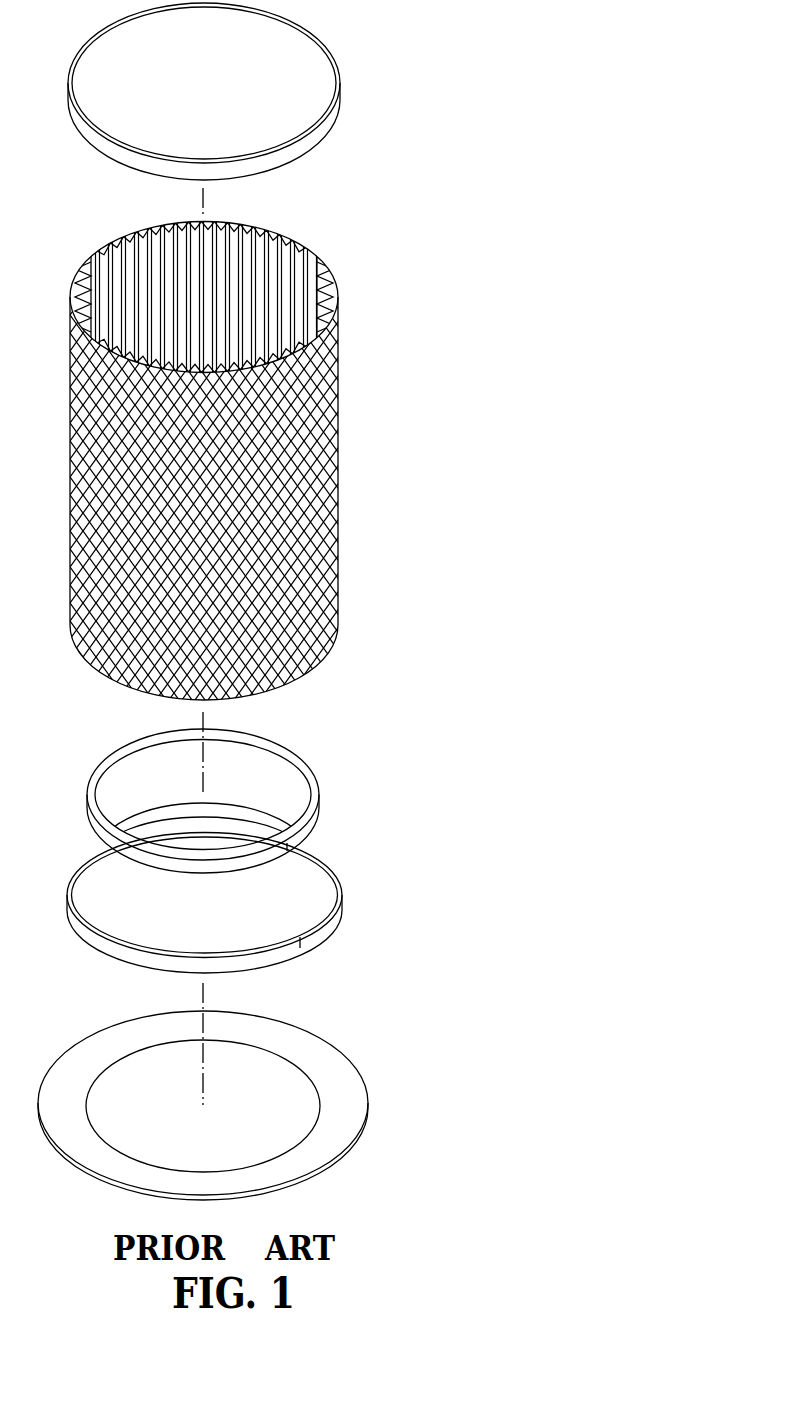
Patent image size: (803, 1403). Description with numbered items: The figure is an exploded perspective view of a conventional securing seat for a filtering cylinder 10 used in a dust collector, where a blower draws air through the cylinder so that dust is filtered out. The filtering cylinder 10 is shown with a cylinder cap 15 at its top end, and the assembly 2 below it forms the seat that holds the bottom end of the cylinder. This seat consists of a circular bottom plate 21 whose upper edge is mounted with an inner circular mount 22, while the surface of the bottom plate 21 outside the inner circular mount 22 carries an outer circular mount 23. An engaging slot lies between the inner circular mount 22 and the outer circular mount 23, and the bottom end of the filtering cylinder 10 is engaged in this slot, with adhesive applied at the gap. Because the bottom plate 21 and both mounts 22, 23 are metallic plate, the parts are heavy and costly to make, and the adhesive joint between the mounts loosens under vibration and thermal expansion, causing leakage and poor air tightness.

The cylinder cap 15 is at (320, 78).
The filtering cylinder 10 is at (337, 440).
The sealing ring assembly 2 is at (247, 955).
The inner circular mount 22 is at (307, 767).
The outer circular mount 23 is at (333, 863).
The circular bottom plate 21 is at (347, 1075).